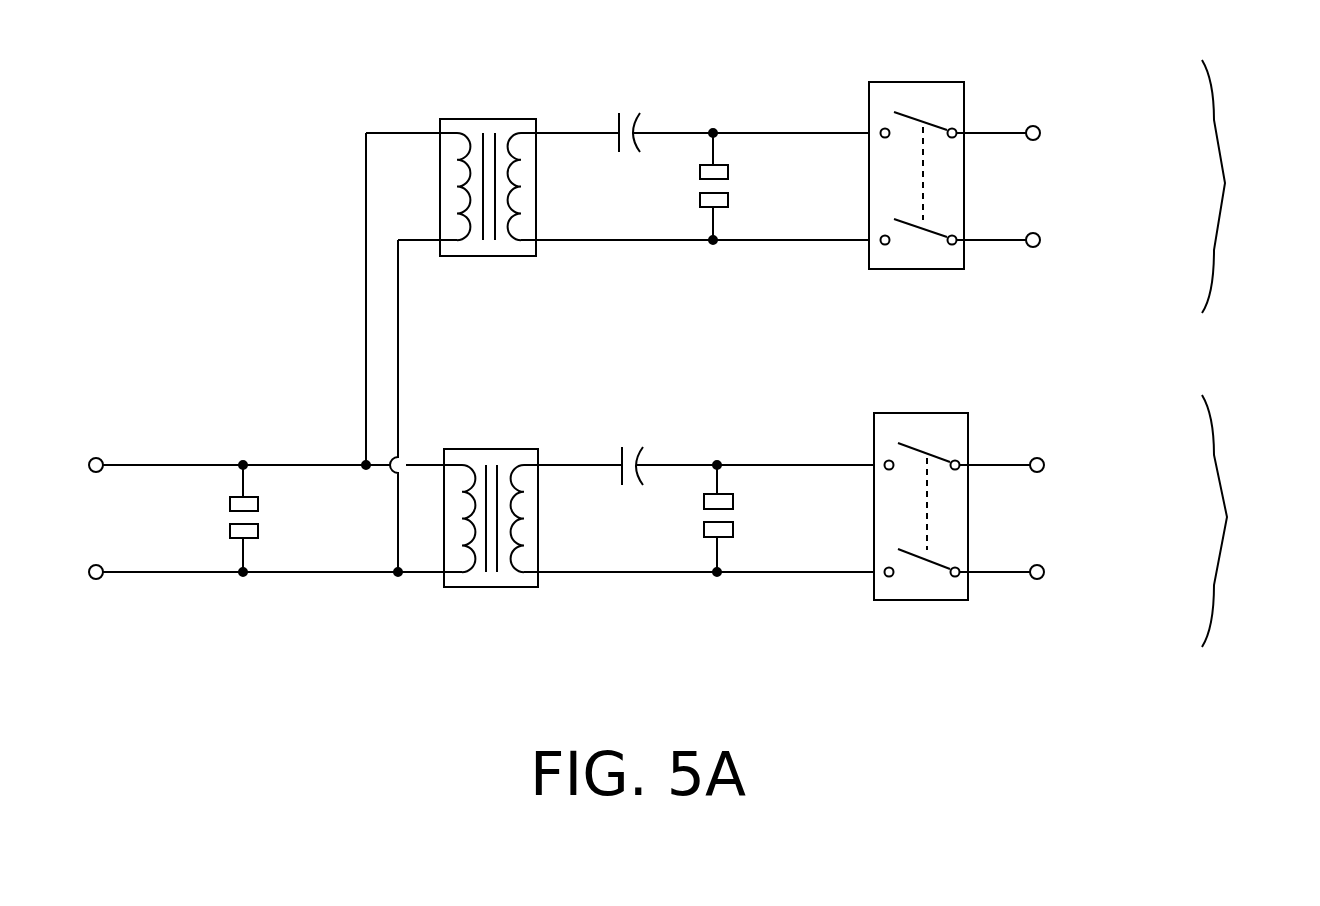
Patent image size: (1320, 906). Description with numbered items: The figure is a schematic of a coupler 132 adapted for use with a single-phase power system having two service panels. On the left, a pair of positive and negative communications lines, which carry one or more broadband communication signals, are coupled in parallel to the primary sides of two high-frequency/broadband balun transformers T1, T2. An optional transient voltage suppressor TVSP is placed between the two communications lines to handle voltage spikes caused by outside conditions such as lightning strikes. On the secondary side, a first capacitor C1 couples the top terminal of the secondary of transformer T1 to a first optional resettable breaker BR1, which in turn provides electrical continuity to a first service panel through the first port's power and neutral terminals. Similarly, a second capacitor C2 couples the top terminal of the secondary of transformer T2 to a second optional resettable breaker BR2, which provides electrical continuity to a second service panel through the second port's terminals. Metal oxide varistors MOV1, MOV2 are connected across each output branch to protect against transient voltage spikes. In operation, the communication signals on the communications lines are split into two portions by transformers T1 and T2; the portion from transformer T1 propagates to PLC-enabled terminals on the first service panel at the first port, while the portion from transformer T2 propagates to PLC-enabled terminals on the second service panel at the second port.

The coupler 132 is at (240, 176).
The high-frequency/broadband balun transformer T1 is at (488, 173).
The high-frequency/broadband balun transformer T2 is at (491, 505).
The first capacitor C1 is at (629, 117).
The second capacitor C2 is at (634, 451).
The metal oxide varistor MOV1 is at (680, 186).
The metal oxide varistor MOV2 is at (683, 518).
The first resettable breaker BR1 is at (916, 159).
The second resettable breaker BR2 is at (921, 528).
The transient voltage suppressor TVSP is at (209, 518).